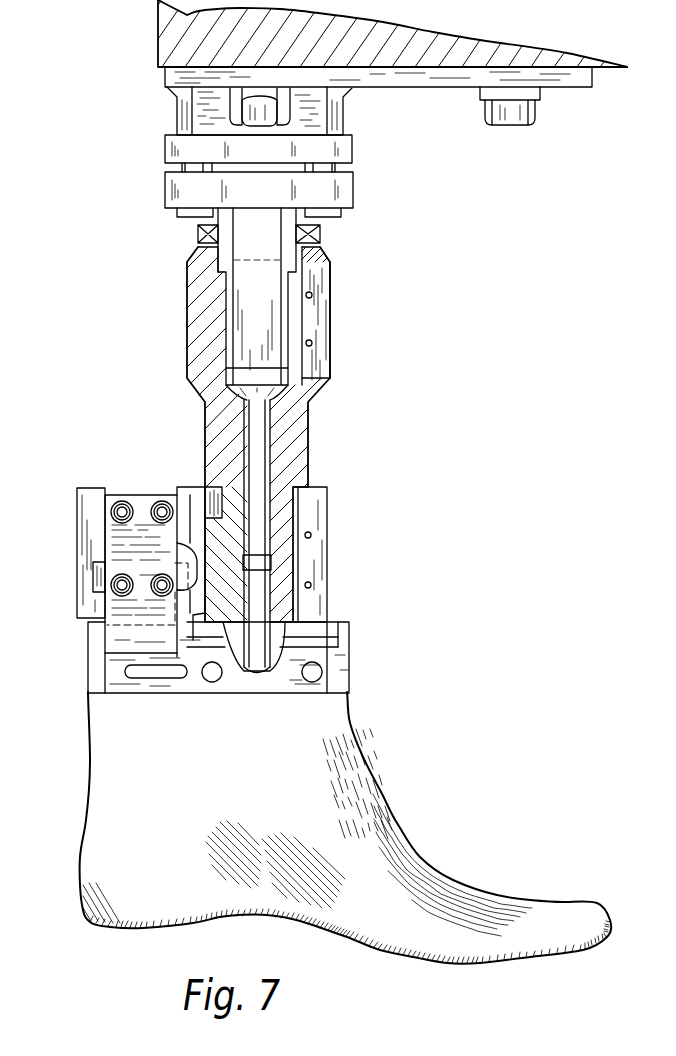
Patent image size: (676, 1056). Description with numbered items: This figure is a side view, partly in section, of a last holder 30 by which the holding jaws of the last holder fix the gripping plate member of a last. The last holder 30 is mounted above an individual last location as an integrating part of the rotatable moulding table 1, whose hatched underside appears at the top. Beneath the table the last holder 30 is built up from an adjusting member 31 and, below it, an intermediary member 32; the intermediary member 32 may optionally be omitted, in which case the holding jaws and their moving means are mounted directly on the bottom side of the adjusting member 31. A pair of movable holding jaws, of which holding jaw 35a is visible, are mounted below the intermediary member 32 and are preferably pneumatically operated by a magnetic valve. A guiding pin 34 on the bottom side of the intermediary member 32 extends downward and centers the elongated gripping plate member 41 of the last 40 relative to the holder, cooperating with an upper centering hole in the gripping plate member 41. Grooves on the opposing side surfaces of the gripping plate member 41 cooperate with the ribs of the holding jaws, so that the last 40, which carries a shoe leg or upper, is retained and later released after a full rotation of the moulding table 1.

The rotatable moulding table 1 is at (158, 26).
The last holder 30 is at (333, 343).
The adjusting member 31 is at (352, 200).
The intermediary member 32 is at (196, 300).
The guiding pin 34 is at (260, 585).
The holding jaw 35a is at (128, 607).
The last 40 is at (384, 831).
The gripping plate member 41 is at (340, 666).